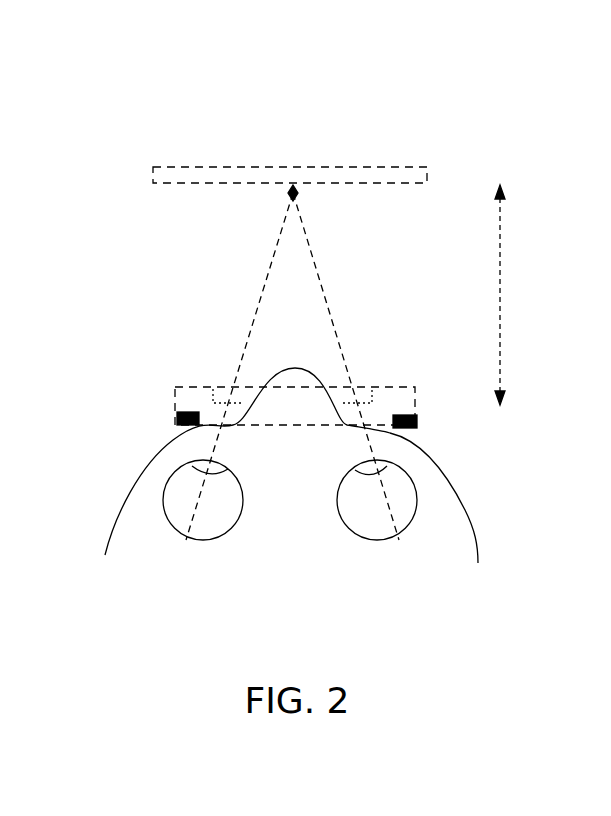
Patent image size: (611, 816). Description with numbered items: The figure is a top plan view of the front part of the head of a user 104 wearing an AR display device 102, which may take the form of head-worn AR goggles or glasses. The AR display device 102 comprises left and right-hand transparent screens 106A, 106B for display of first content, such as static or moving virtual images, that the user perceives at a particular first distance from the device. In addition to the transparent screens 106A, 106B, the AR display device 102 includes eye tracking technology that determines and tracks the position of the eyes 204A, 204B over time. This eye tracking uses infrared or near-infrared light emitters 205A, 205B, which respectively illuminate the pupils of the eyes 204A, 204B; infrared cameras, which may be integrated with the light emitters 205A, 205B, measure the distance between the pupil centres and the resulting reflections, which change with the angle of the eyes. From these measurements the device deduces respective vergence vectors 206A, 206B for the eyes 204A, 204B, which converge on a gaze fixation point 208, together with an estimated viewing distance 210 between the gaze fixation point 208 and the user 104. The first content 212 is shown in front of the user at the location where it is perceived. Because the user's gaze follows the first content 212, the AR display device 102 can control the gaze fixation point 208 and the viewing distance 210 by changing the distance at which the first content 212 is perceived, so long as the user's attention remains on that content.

The AR display device 102 is at (175, 407).
The user 104 is at (270, 575).
The left-hand transparent screen 106A is at (213, 403).
The right-hand transparent screen 106B is at (360, 402).
The eye 204A is at (182, 518).
The eye 204B is at (400, 517).
The light emitter 205A is at (175, 420).
The light emitter 205B is at (417, 428).
The vergence vector 206A is at (252, 323).
The vergence vector 206B is at (333, 325).
The gaze fixation point 208 is at (292, 183).
The viewing distance 210 is at (502, 293).
The first content 212 is at (173, 167).